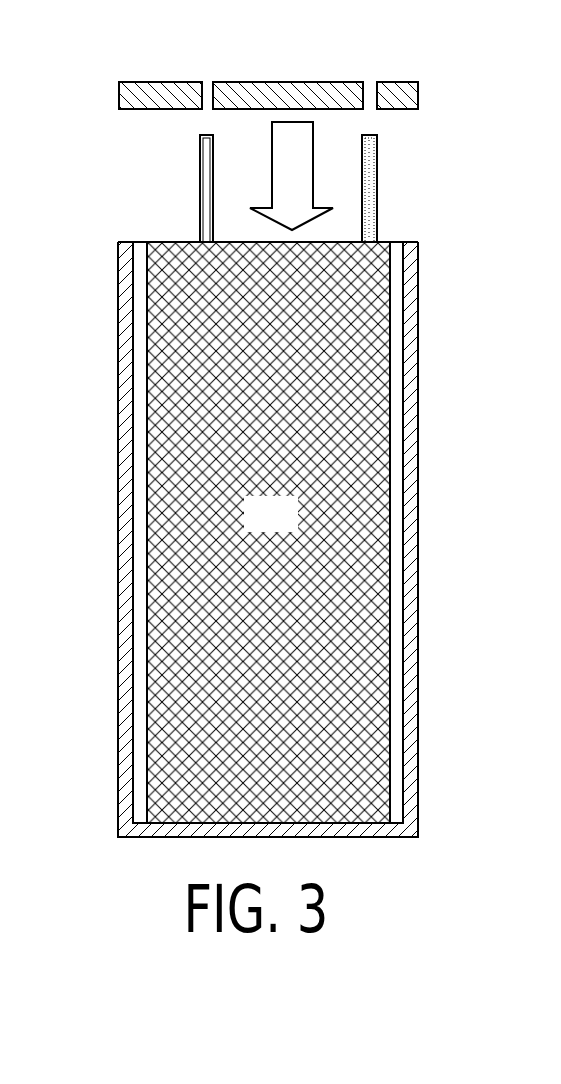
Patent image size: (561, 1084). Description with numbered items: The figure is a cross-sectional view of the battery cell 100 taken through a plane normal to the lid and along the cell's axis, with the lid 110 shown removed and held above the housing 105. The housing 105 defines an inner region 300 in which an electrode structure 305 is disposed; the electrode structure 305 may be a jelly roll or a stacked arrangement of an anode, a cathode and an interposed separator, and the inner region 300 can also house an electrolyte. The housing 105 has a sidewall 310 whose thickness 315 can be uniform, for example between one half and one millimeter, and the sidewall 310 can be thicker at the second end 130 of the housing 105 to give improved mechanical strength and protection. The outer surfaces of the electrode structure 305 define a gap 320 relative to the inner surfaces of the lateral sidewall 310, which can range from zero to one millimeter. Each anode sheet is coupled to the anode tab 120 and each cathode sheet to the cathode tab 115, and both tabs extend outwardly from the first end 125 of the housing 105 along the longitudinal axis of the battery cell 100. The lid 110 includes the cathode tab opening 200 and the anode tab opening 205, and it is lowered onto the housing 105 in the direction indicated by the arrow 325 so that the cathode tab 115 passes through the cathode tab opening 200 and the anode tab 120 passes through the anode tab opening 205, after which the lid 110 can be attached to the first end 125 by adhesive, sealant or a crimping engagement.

The battery cell 100 is at (299, 539).
The housing 105 is at (418, 380).
The lid 110 is at (418, 88).
The cathode tab 115 is at (377, 185).
The anode tab 120 is at (200, 188).
The first end 125 is at (411, 252).
The second end 130 is at (366, 813).
The cathode tab opening 200 is at (369, 70).
The anode tab opening 205 is at (206, 70).
The inner region 300 is at (136, 522).
The electrode structure 305 is at (252, 525).
The sidewall 310 is at (412, 647).
The thickness 315 is at (378, 715).
The gap 320 is at (373, 513).
The arrow 325 is at (276, 176).